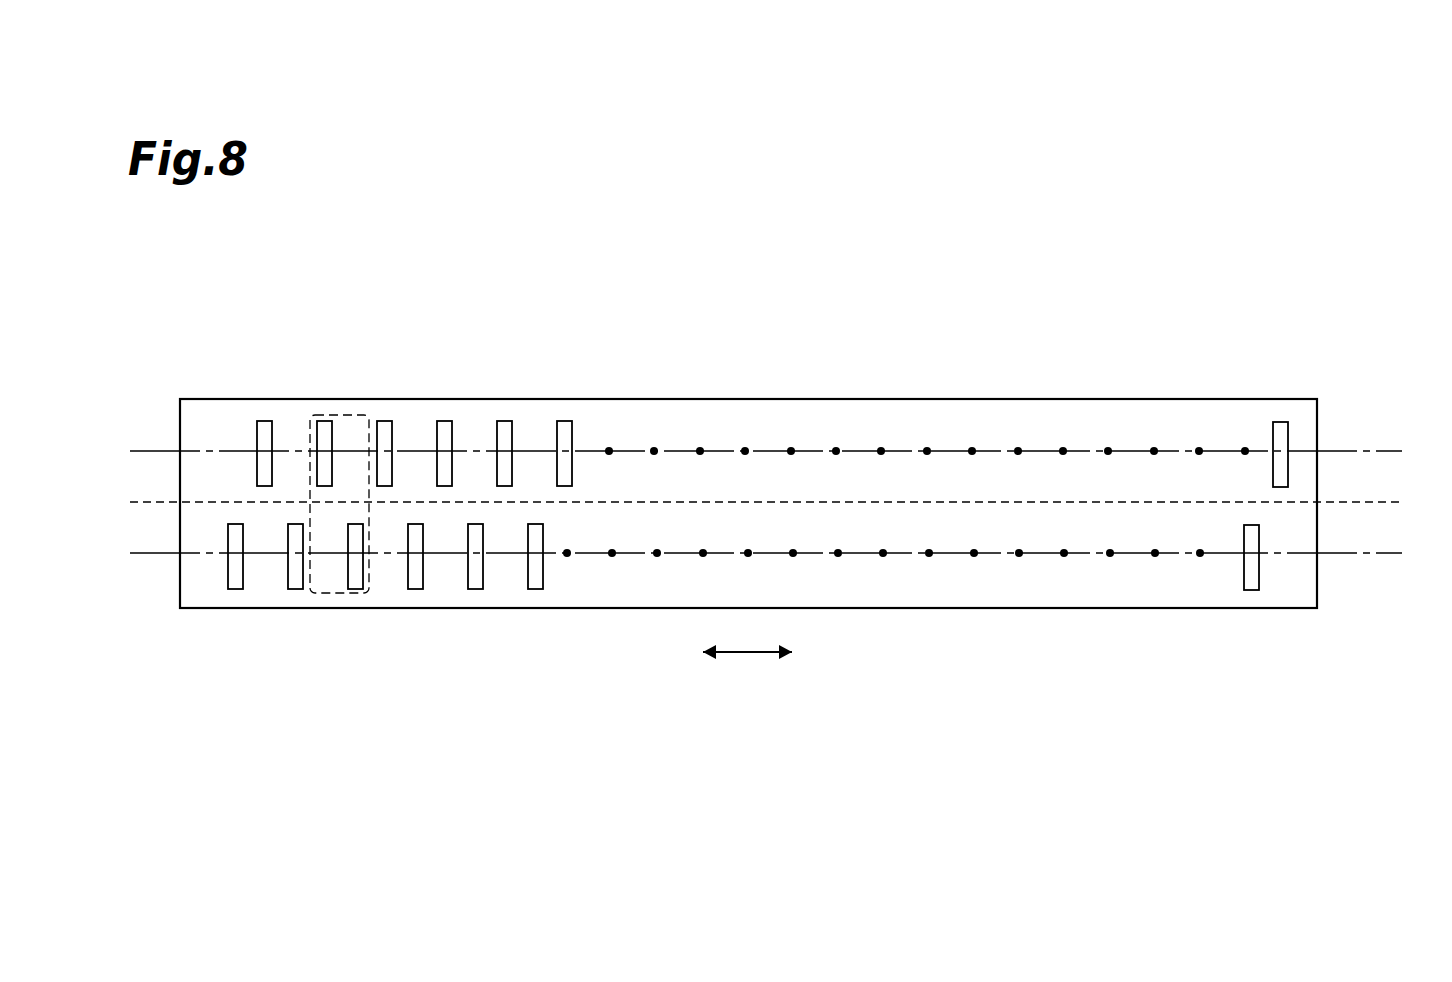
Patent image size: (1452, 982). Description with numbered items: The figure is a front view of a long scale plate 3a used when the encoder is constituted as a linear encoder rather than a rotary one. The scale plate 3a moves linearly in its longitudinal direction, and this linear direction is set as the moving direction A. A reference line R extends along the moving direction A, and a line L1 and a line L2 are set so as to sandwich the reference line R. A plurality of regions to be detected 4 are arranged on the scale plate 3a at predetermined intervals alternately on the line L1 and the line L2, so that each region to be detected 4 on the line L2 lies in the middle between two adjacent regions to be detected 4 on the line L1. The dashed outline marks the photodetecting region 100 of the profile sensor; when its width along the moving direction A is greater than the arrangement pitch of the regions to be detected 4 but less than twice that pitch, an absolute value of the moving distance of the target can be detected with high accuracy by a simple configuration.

The scale plate 3a is at (738, 399).
The regions to be detected 4 is at (445, 421).
The photodetecting region 100 is at (370, 565).
The line L1 is at (143, 450).
The line L2 is at (143, 552).
The moving direction A is at (748, 653).
The reference line R is at (1380, 503).